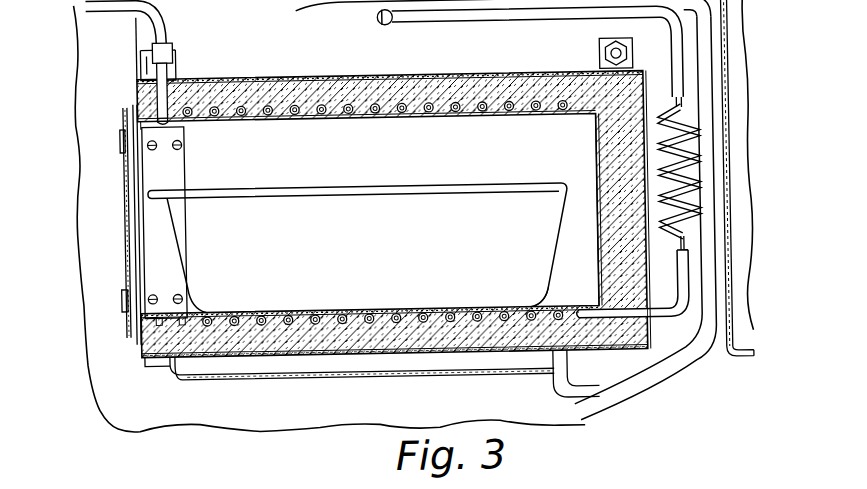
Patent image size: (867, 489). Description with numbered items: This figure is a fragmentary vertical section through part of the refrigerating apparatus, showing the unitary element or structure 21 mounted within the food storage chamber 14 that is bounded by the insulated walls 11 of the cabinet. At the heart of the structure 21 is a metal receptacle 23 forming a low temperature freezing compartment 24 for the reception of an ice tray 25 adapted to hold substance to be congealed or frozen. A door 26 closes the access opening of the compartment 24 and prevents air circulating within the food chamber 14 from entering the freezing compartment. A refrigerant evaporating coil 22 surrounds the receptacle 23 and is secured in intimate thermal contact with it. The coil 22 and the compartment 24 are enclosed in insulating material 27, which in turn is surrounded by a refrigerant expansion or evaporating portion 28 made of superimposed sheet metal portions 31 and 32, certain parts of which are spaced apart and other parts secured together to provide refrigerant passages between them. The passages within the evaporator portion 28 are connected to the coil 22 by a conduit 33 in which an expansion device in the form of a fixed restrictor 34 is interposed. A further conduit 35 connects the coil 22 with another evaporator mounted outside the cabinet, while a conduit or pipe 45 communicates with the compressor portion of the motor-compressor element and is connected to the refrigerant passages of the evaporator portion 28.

The insulated walls 11 is at (750, 134).
The food storage chamber 14 is at (98, 390).
The unitary element or structure 21 is at (341, 62).
The refrigerant evaporating coil 22 is at (326, 321).
The metal receptacle 23 is at (566, 311).
The compartment 24 is at (412, 143).
The ice tray 25 is at (294, 213).
The door 26 is at (132, 238).
The insulating material 27 is at (478, 91).
The refrigerant expansion or evaporating portion 28 is at (165, 364).
The sheet metal portion 31 is at (360, 352).
The sheet metal portion 32 is at (476, 373).
The conduit 33 is at (534, 17).
The fixed restrictor 34 is at (694, 193).
The conduit 35 is at (162, 22).
The conduit or pipe 45 is at (301, 8).